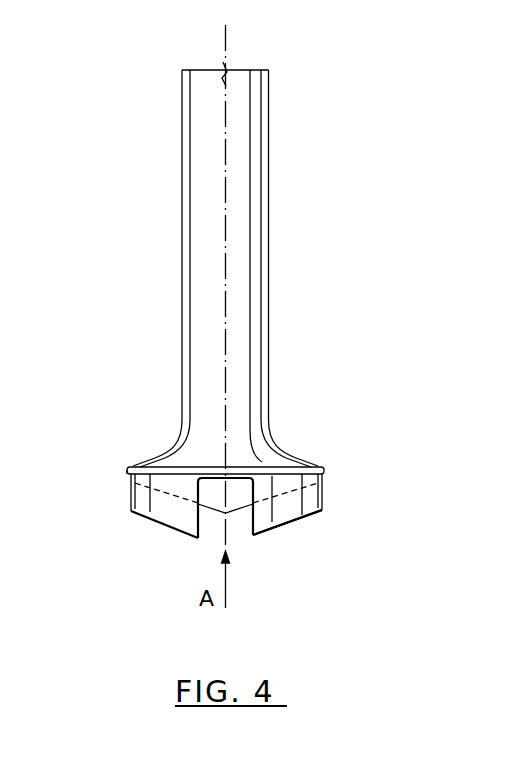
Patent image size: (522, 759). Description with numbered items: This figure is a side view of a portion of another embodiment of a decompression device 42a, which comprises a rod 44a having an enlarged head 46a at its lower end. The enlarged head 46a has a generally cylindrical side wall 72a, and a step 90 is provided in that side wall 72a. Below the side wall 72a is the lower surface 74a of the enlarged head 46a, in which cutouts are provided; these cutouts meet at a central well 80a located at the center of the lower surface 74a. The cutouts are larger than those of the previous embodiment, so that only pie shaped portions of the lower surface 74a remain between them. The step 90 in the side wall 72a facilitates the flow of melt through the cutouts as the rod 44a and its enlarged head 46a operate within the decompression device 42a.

The decompression device 42a is at (251, 337).
The rod 44a is at (250, 245).
The enlarged head 46a is at (289, 469).
The generally cylindrical side wall 72a is at (330, 476).
The lower surface 74a is at (312, 515).
The central well 80a is at (240, 530).
The step 90 is at (127, 485).